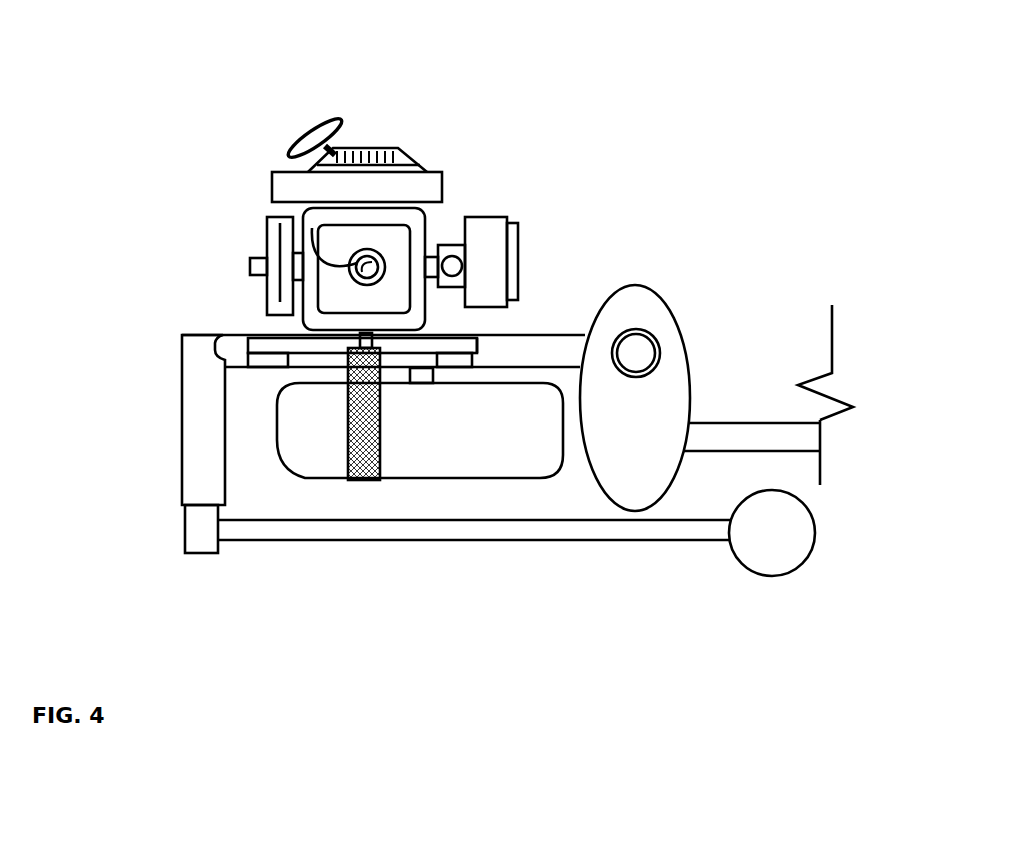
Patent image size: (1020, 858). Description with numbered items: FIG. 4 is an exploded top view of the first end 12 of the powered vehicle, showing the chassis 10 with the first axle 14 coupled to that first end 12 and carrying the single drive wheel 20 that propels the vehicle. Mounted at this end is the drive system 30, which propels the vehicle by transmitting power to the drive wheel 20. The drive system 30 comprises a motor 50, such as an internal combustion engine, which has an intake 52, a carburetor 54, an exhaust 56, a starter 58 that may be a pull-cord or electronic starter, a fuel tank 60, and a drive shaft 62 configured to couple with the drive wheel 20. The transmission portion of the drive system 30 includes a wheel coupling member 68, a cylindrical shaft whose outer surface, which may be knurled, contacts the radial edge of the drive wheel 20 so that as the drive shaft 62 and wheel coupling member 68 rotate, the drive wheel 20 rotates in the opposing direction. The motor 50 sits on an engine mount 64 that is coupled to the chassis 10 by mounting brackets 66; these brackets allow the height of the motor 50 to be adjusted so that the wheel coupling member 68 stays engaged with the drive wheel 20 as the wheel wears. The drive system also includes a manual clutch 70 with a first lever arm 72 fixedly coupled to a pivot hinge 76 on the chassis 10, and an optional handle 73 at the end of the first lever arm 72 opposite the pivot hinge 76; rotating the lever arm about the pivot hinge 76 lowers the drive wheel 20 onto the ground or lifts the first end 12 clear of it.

The chassis 10 is at (570, 335).
The first end 12 is at (627, 97).
The first axle 14 is at (420, 377).
The drive wheel 20 is at (427, 455).
The drive system 30 is at (448, 140).
The motor 50 is at (387, 242).
The intake 52 is at (490, 242).
The carburetor 54 is at (452, 255).
The exhaust 56 is at (265, 238).
The starter 58 is at (363, 147).
The fuel tank 60 is at (655, 318).
The drive shaft 62 is at (358, 345).
The engine mount 64 is at (477, 335).
The mounting brackets 66 is at (250, 368).
The wheel coupling member 68 is at (365, 445).
The manual clutch 70 is at (227, 580).
The first lever arm 72 is at (522, 535).
The handle 73 is at (763, 552).
The pivot hinge 76 is at (203, 455).